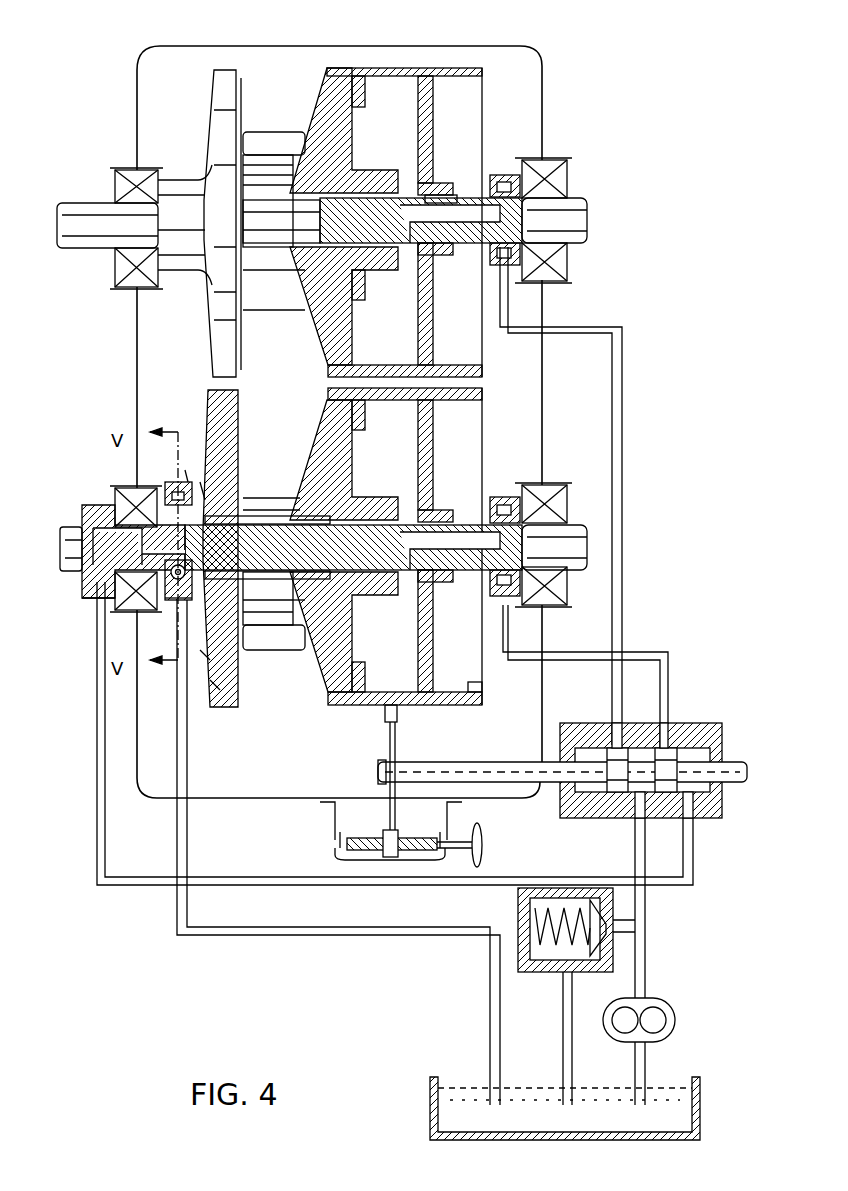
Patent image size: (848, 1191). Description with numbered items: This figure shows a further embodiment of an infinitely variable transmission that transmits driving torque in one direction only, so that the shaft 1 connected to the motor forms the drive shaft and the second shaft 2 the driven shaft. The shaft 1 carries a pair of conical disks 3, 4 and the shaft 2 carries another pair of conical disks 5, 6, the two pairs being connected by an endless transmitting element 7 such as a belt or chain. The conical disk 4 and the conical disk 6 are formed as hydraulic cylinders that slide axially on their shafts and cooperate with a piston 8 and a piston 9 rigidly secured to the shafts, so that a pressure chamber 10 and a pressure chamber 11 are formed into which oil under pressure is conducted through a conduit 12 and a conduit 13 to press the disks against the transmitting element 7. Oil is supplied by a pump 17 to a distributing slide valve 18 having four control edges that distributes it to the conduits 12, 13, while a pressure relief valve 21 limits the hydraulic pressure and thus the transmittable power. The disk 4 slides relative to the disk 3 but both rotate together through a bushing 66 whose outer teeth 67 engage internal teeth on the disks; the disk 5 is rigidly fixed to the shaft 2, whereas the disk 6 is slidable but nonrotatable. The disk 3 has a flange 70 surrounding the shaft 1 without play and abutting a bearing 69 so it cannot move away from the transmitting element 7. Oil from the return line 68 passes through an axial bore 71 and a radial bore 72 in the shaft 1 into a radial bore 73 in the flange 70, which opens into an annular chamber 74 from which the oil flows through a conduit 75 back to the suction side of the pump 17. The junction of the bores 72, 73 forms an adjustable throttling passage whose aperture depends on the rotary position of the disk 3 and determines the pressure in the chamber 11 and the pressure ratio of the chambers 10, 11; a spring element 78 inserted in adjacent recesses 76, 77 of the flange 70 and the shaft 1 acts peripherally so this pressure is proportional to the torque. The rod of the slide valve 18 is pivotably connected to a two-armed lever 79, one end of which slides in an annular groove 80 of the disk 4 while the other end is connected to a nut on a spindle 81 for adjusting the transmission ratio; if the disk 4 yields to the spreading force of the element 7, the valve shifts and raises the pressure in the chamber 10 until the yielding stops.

The shaft 1 is at (570, 540).
The second shaft 2 is at (570, 212).
The conical disk 3 is at (215, 707).
The conical disk 4 is at (330, 690).
The conical disk 5 is at (222, 88).
The conical disk 6 is at (335, 78).
The endless transmitting element 7 is at (263, 640).
The piston 8 is at (428, 452).
The piston 9 is at (428, 107).
The pressure chamber 10 is at (395, 427).
The pressure chamber 11 is at (388, 105).
The conduit 12 is at (668, 665).
The conduit 13 is at (618, 455).
The pump 17 is at (656, 1021).
The distributing slide valve 18 is at (665, 762).
The pressure relief valve 21 is at (606, 912).
The bushing 66 is at (215, 685).
The outer teeth 67 is at (295, 650).
The return line 68 is at (97, 798).
The bearing 69 is at (135, 506).
The flange 70 is at (165, 500).
The axial bore 71 is at (98, 584).
The radial bore 72 is at (118, 515).
The radial bore 73 is at (185, 472).
The annular chamber 74 is at (165, 600).
The conduit 75 is at (177, 822).
The recess 76 is at (200, 485).
The recess 77 is at (205, 655).
The spring element 78 is at (170, 576).
The two-armed lever 79 is at (392, 850).
The annular groove 80 is at (470, 688).
The spindle 81 is at (362, 855).